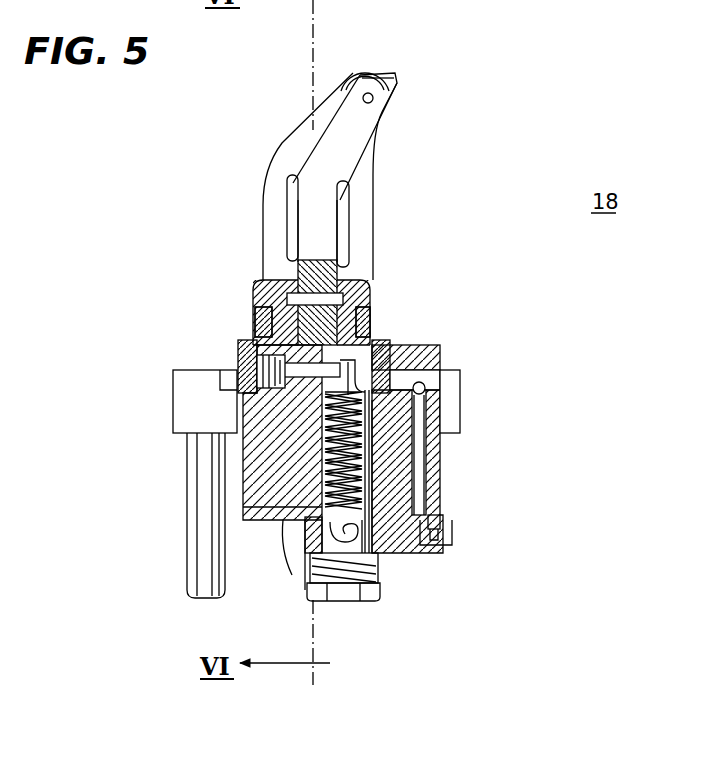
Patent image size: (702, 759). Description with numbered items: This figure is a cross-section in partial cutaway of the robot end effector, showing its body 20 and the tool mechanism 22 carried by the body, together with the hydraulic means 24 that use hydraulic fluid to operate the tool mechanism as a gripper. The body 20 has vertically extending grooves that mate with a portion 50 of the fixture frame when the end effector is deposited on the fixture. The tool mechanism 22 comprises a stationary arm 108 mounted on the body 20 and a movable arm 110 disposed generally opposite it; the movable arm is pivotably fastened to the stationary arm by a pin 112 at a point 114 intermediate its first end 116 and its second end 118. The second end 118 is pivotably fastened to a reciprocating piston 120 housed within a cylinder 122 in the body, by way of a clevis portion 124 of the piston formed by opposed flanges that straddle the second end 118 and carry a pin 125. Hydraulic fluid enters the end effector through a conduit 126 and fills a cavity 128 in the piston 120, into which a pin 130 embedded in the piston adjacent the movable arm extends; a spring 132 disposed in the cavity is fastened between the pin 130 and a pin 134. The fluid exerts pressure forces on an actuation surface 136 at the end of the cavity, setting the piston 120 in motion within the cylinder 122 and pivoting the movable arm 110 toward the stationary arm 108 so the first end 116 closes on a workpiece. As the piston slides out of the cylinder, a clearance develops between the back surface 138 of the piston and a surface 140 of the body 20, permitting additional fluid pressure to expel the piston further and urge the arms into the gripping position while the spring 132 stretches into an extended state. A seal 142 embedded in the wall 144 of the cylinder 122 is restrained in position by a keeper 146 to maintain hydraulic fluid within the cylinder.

The body 20 is at (172, 405).
The tool mechanism 22 is at (178, 182).
The hydraulic means 24 is at (167, 320).
The portion of frame 50 is at (194, 568).
The stationary arm 108 is at (282, 134).
The movable arm 110 is at (372, 165).
The pin 112 is at (288, 207).
The point 114 is at (322, 198).
The first end 116 is at (380, 110).
The second end 118 is at (340, 273).
The reciprocating piston 120 is at (254, 302).
The cylinder 122 is at (250, 472).
The clevis portion 124 is at (368, 296).
The pin 125 is at (270, 282).
The conduit 126 is at (432, 485).
The cavity 128 is at (376, 562).
The pin 130 is at (392, 353).
The spring 132 is at (425, 374).
The pin 134 is at (334, 556).
The actuation surface 136 is at (392, 337).
The back surface 138 is at (288, 517).
The surface 140 is at (300, 545).
The seal 142 is at (424, 398).
The wall 144 is at (376, 462).
The keeper 146 is at (239, 347).